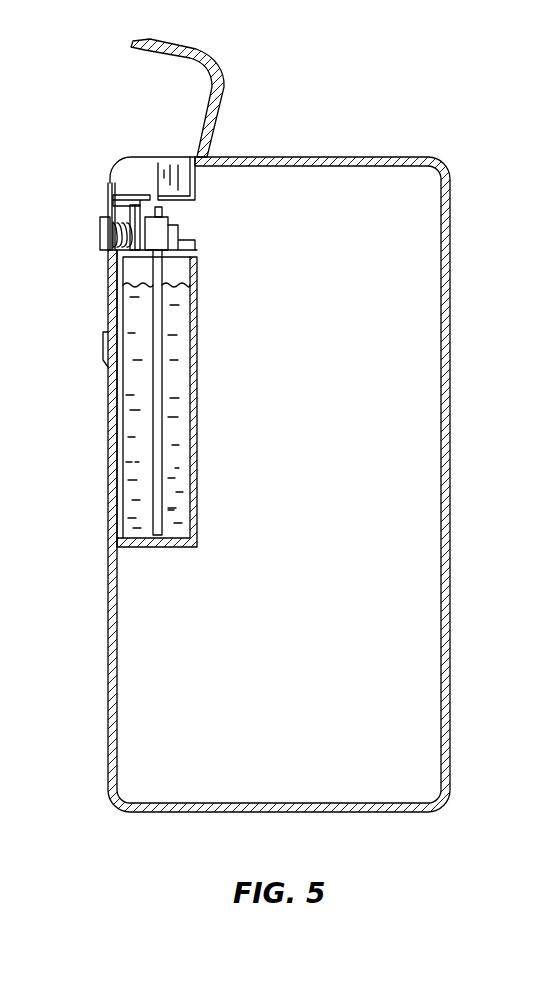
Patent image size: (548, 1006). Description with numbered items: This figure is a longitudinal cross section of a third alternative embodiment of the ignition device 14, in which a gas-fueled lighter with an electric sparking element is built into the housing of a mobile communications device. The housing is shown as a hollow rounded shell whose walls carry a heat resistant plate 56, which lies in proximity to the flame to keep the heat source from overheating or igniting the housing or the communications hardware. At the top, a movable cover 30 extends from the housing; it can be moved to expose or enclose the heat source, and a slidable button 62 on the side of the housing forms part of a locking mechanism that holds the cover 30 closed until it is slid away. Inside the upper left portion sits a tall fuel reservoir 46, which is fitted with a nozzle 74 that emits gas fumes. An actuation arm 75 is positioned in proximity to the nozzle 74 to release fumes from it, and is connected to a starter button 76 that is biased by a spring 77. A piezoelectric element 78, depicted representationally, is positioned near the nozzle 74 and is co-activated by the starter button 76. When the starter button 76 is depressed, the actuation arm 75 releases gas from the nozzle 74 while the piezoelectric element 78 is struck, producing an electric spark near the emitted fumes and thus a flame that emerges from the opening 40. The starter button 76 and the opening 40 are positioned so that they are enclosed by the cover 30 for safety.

The ignition device 14 is at (235, 415).
The cover 30 is at (216, 62).
The opening 40 is at (159, 171).
The fuel reservoir 46 is at (181, 455).
The heat resistant plate 56 is at (203, 173).
The slidable button 62 is at (104, 352).
The nozzle 74 is at (168, 210).
The actuation arm 75 is at (169, 218).
The starter button 76 is at (98, 234).
The spring 77 is at (112, 252).
The piezoelectric element 78 is at (107, 203).